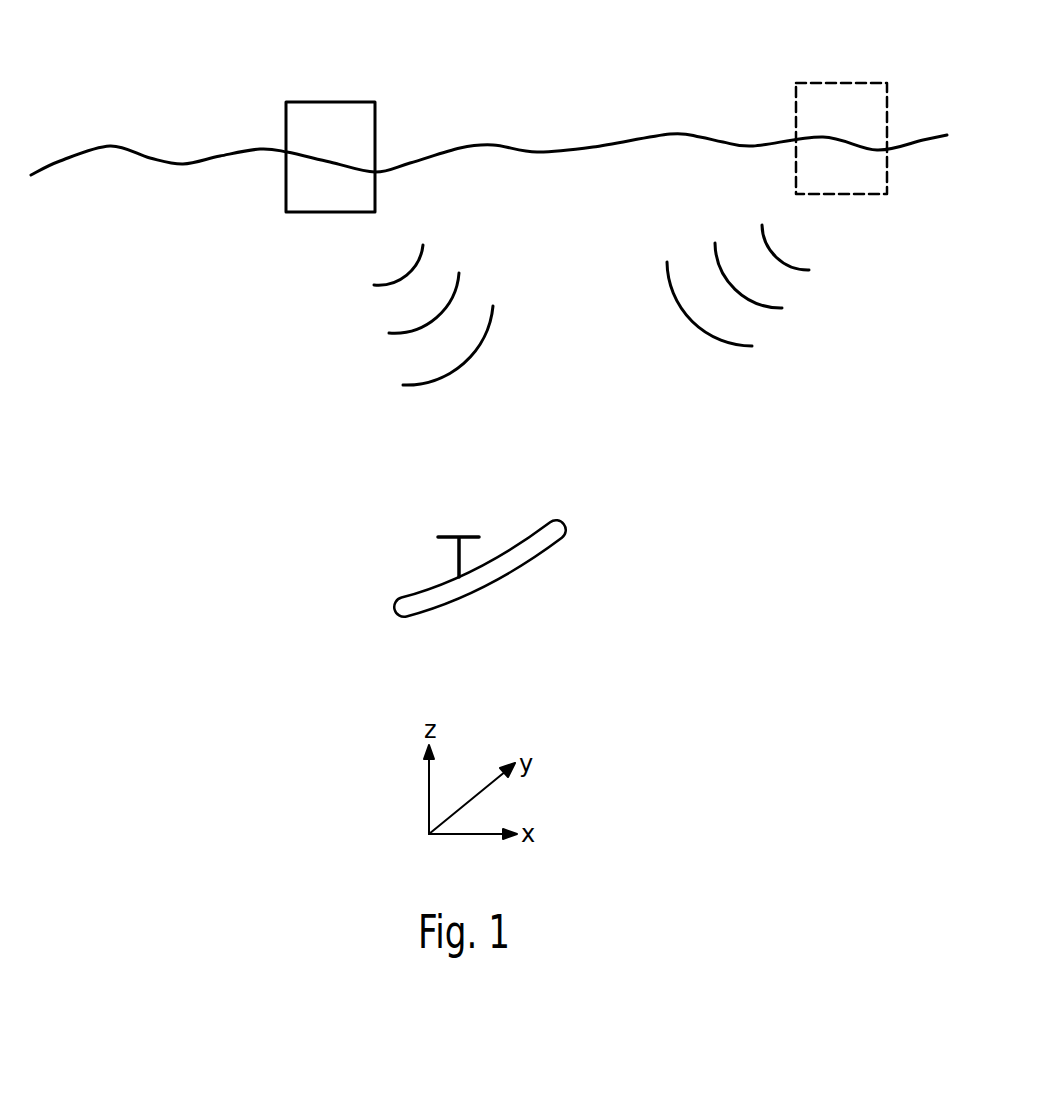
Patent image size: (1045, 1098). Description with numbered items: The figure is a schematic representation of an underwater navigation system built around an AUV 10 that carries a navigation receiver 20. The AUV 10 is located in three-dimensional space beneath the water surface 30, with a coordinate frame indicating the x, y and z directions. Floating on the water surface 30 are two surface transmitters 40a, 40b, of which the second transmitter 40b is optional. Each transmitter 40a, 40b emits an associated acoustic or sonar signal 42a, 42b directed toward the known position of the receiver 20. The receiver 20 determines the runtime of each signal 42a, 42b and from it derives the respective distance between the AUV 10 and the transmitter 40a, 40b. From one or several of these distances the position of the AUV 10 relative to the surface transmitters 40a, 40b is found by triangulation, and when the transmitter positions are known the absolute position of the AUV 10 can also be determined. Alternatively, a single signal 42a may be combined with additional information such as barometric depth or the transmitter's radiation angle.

The AUV 10 is at (495, 587).
The navigation receiver 20 is at (453, 564).
The water surface 30 is at (107, 146).
The surface transmitter 40a is at (328, 102).
The surface transmitter 40b is at (838, 83).
The signal 42a is at (468, 193).
The signal 42b is at (737, 193).